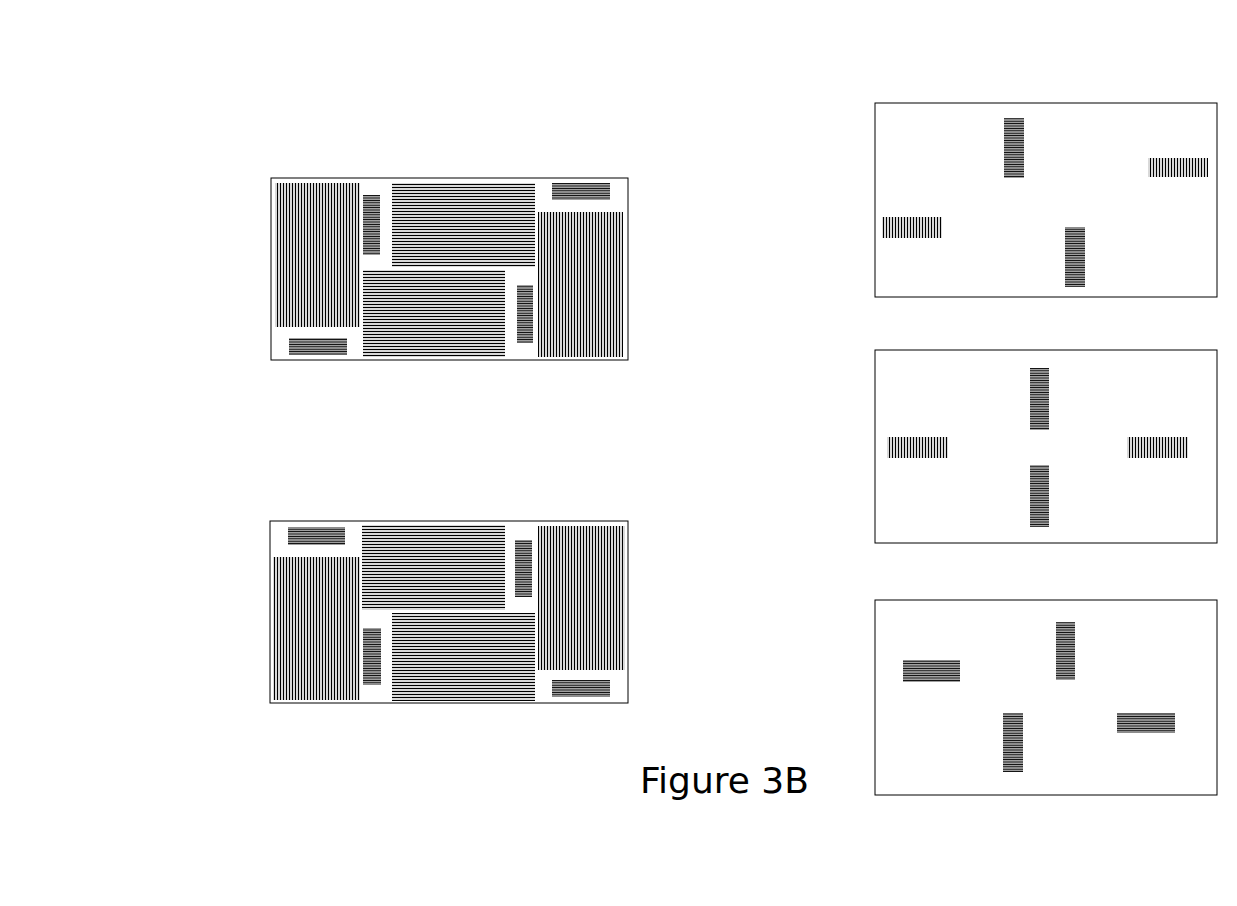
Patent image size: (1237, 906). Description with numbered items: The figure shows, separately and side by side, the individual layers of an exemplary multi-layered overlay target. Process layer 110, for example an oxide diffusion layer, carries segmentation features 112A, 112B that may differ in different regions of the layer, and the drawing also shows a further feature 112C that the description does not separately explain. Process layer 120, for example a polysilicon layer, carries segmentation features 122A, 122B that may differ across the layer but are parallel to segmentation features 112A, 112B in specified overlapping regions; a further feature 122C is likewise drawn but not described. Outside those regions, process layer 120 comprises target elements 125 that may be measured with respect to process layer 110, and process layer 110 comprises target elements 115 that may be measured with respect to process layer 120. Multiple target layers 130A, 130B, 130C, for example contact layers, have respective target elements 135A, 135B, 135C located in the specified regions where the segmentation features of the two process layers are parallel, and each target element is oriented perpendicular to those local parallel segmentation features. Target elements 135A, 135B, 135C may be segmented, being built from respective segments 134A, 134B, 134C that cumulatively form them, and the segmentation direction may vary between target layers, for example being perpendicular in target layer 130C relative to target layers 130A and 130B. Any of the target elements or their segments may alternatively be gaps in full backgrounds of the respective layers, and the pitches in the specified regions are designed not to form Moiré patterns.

The process layer 110 is at (257, 103).
The segmentation features 112A is at (272, 186).
The segmentation features 112B is at (410, 233).
The third conductive region 112C is at (372, 243).
The target elements 115 is at (370, 186).
The process layer 120 is at (252, 480).
The segmentation features 122A is at (272, 622).
The segmentation features 122B is at (512, 643).
The third conductive region 122C is at (372, 648).
The target elements 125 is at (284, 547).
The target layer 130A is at (952, 56).
The segments 134A is at (1015, 120).
The target elements 135A is at (1040, 154).
The target layer 130B is at (942, 337).
The segments 134B is at (1050, 391).
The target elements 135B is at (1147, 432).
The target layer 130C is at (945, 593).
The segments 134C is at (1076, 632).
The target elements 135C is at (1148, 705).